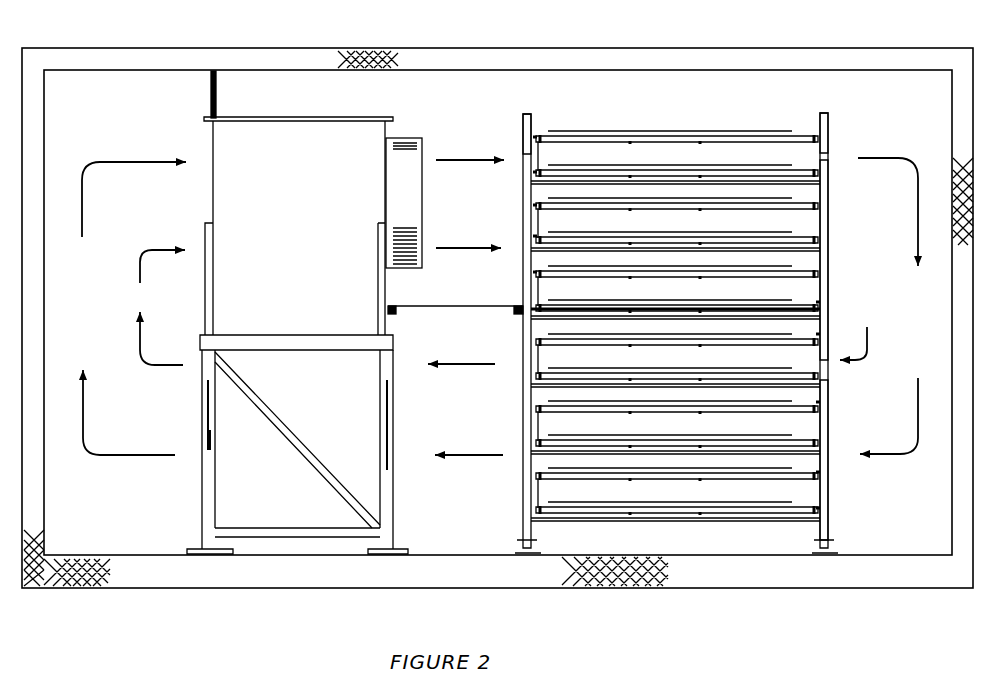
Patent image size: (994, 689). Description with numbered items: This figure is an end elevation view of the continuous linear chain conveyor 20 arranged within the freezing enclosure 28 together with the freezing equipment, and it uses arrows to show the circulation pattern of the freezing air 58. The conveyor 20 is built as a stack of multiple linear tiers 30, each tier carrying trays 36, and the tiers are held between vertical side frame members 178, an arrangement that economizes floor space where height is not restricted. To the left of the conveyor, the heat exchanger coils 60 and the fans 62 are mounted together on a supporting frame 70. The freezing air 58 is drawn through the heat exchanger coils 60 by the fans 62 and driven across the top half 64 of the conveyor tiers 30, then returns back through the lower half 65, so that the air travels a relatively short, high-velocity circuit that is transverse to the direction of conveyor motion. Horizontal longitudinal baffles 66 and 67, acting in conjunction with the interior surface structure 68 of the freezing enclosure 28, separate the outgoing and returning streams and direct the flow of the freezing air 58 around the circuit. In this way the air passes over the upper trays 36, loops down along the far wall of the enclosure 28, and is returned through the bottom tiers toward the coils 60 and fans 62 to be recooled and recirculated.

The freezing enclosure 28 is at (734, 47).
The interior surface structure 68 is at (50, 112).
The heat exchanger coils 60 is at (210, 146).
The fans 62 is at (404, 138).
The horizontal longitudinal baffle 66 is at (411, 306).
The horizontal longitudinal baffle 67 is at (558, 309).
The supporting frame 70 is at (202, 506).
The continuous linear chain conveyor 20 is at (829, 151).
The vertical side frame members 178 is at (527, 113).
The top half of conveyor tiers 64 is at (829, 219).
The lower half of conveyor tiers 65 is at (829, 430).
The trays 36 is at (666, 126).
The linear tiers 30 is at (522, 137).
The freezing air 58 is at (134, 157).